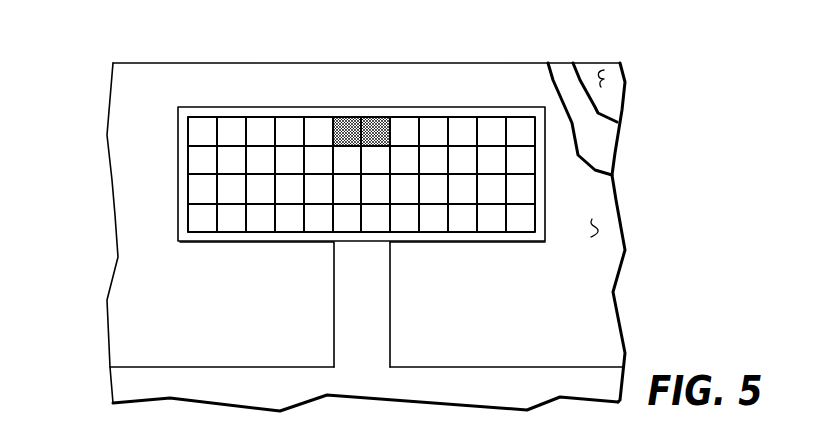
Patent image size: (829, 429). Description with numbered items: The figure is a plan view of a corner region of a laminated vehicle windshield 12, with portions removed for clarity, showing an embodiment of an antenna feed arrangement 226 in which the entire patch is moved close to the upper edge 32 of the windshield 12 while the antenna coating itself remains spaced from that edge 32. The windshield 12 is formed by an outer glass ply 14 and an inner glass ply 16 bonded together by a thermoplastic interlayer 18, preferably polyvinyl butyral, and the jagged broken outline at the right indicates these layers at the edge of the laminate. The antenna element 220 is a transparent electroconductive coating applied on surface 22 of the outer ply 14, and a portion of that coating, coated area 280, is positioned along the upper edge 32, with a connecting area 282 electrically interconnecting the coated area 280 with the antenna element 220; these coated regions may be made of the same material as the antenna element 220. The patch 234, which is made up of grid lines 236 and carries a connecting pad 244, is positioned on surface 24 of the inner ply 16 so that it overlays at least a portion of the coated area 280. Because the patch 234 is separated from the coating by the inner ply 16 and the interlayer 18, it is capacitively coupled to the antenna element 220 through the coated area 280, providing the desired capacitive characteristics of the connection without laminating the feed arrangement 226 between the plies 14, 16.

The windshield 12 is at (107, 139).
The outer glass ply 14 is at (627, 85).
The inner glass ply 16 is at (593, 163).
The thermoplastic interlayer 18 is at (597, 108).
The surface of outer ply 22 is at (625, 80).
The surface of inner ply 24 is at (598, 232).
The upper edge 32 is at (152, 62).
The antenna element 220 is at (138, 367).
The antenna feed arrangement 226 is at (295, 154).
The patch 234 is at (290, 188).
The grid lines 236 is at (228, 175).
The connecting pad 244 is at (358, 115).
The coated area 280 is at (227, 242).
The connecting area 282 is at (333, 315).